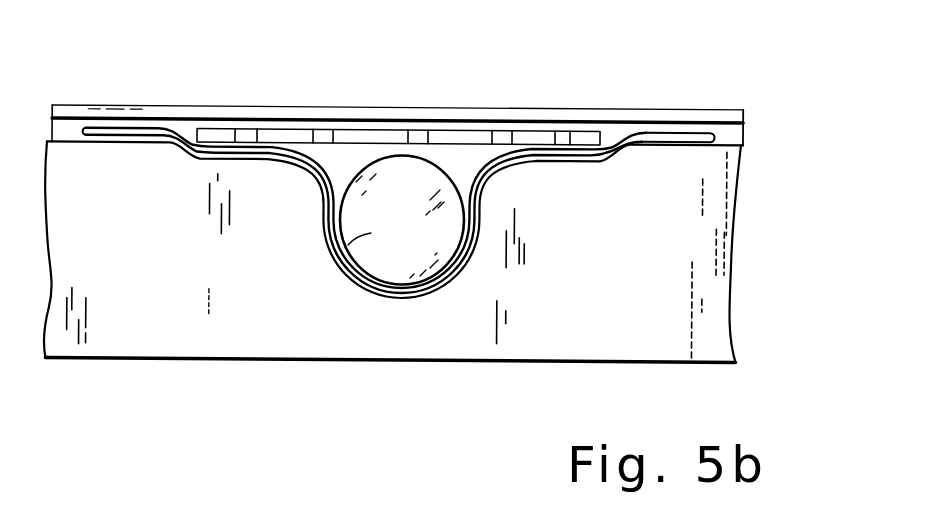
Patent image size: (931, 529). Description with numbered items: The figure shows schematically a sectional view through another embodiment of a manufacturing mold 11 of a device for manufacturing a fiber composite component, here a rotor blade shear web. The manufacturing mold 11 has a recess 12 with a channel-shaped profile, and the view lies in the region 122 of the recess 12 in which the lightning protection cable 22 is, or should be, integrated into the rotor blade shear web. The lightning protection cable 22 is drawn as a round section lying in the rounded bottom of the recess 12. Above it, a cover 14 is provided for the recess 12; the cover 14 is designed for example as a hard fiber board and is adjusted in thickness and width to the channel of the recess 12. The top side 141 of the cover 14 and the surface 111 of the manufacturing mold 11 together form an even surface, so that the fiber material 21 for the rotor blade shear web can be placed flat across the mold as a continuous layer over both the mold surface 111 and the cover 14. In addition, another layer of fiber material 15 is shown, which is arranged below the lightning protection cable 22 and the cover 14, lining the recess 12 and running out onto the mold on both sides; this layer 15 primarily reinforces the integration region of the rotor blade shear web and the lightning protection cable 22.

The manufacturing mold 11 is at (155, 308).
The surface of the manufacturing mold 111 is at (70, 139).
The recess 12 is at (455, 268).
The region 122 is at (463, 177).
The cover 14 is at (465, 137).
The top side of the cover 141 is at (353, 121).
The layer of fiber material 15 is at (628, 125).
The fiber material 21 is at (277, 115).
The lightning protection cable 22 is at (372, 232).